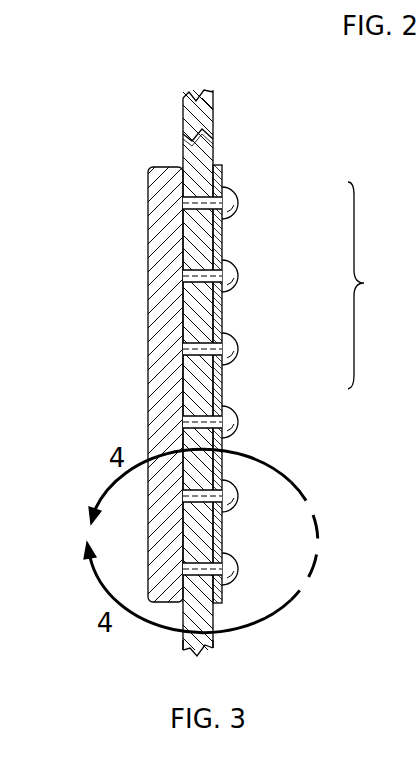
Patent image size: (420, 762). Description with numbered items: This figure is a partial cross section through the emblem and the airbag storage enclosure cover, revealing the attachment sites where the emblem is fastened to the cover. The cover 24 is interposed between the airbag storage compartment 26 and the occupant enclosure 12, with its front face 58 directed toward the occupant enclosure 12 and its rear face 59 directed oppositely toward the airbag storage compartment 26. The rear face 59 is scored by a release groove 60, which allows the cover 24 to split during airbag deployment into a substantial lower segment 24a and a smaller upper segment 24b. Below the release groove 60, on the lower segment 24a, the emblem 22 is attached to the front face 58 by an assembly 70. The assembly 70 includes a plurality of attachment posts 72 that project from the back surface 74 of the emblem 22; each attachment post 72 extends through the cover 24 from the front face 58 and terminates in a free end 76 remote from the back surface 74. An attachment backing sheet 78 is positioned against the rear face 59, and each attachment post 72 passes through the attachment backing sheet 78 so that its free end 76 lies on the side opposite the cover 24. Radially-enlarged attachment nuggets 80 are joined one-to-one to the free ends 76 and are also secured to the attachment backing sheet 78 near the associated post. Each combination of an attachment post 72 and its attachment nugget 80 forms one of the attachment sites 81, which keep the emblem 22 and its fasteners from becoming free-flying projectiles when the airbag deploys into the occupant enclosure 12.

The occupant enclosure 12 is at (89, 330).
The emblem 22 is at (140, 225).
The cover 24 is at (196, 82).
The lower segment 24a is at (196, 118).
The upper segment 24b is at (200, 185).
The airbag storage compartment 26 is at (294, 435).
The front face 58 is at (183, 640).
The rear face 59 is at (213, 640).
The release groove 60 is at (215, 135).
The assembly 70 is at (374, 285).
The attachment posts 72 is at (222, 170).
The back surface 74 is at (205, 258).
The free end 76 is at (223, 262).
The attachment backing sheet 78 is at (230, 322).
The attachment nuggets 80 is at (252, 272).
The attachment sites 81 is at (190, 296).